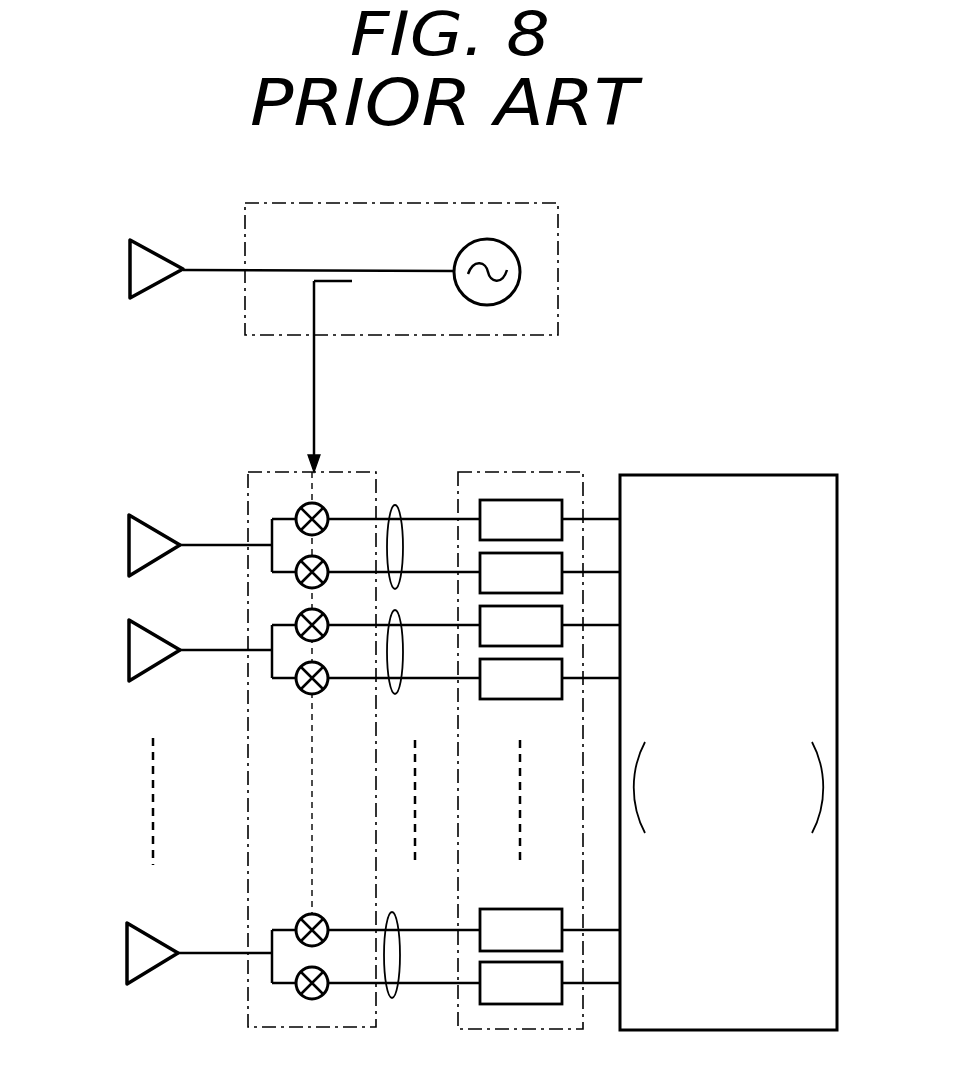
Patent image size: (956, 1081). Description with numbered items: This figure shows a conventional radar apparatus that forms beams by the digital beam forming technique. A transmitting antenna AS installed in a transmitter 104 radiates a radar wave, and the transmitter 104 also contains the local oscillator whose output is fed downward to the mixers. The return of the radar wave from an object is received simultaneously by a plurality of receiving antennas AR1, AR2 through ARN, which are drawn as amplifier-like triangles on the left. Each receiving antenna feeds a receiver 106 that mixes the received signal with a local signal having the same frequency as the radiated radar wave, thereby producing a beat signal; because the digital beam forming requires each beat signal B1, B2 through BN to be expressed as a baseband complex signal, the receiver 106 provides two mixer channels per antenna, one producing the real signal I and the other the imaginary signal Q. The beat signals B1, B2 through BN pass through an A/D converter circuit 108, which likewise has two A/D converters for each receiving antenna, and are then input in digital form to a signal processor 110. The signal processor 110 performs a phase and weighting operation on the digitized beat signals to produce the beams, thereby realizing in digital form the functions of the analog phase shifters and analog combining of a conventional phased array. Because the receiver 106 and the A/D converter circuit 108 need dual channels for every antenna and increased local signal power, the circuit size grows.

The transmitter 104 is at (558, 245).
The receiver 106 is at (342, 472).
The A/D converter circuit 108 is at (546, 472).
The signal processor 110 is at (768, 475).
The transmitting antenna AS is at (129, 270).
The receiving antenna AR1 is at (129, 535).
The receiving antenna AR2 is at (129, 640).
The receiving antenna ARN is at (127, 946).
The beat signal B1 is at (396, 507).
The beat signal B2 is at (414, 591).
The beat signal BN is at (393, 915).